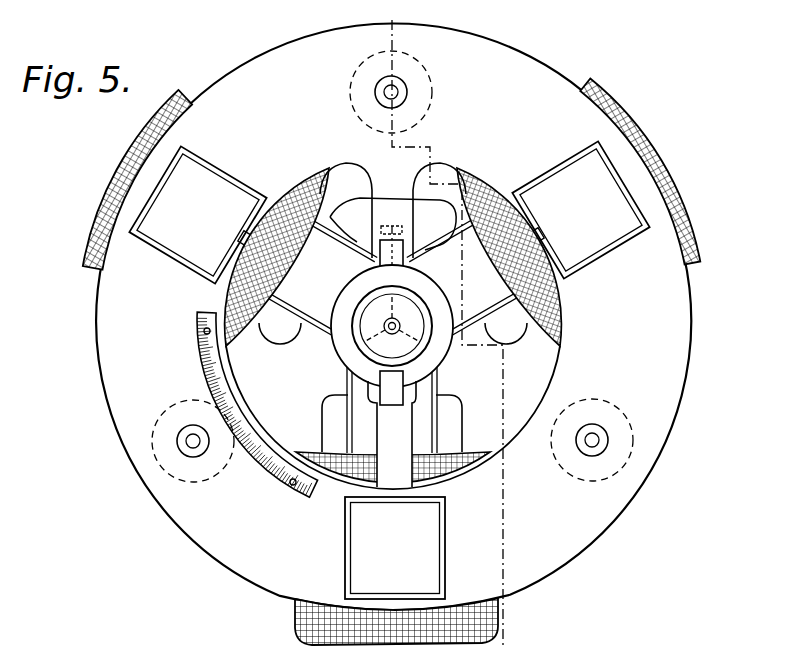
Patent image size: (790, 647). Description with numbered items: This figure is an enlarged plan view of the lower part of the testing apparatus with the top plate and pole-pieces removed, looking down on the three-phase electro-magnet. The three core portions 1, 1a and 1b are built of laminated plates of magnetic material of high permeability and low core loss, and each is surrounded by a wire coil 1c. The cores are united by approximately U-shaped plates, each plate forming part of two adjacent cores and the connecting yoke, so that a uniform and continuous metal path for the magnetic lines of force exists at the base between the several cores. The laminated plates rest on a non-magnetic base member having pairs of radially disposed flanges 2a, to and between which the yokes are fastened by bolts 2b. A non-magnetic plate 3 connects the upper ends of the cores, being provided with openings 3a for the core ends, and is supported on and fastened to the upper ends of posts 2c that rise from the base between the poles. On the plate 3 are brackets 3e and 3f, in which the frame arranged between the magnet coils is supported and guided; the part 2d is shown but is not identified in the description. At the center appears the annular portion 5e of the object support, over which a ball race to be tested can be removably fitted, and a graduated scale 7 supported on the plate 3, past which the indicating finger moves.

The core portion 1 is at (198, 215).
The core portion 1a is at (581, 210).
The core portion 1b is at (395, 548).
The wire coils 1c is at (632, 137).
The radially disposed flanges 2a is at (327, 217).
The bolts 2b is at (404, 230).
The posts 2c is at (404, 105).
The guide rod 2d is at (412, 258).
The plate 3 is at (682, 395).
The openings 3a is at (186, 268).
The bracket 3e is at (392, 429).
The bracket 3f is at (349, 237).
The annular portion 5e is at (364, 316).
The graduated scale 7 is at (392, 24).